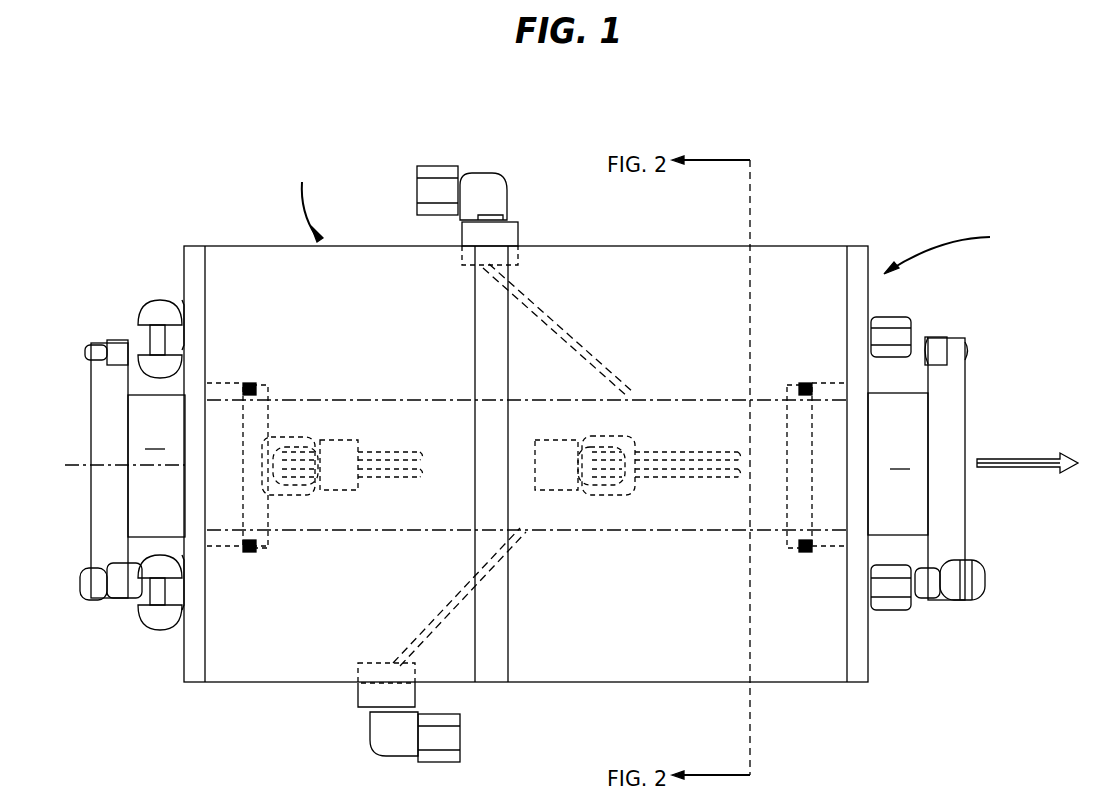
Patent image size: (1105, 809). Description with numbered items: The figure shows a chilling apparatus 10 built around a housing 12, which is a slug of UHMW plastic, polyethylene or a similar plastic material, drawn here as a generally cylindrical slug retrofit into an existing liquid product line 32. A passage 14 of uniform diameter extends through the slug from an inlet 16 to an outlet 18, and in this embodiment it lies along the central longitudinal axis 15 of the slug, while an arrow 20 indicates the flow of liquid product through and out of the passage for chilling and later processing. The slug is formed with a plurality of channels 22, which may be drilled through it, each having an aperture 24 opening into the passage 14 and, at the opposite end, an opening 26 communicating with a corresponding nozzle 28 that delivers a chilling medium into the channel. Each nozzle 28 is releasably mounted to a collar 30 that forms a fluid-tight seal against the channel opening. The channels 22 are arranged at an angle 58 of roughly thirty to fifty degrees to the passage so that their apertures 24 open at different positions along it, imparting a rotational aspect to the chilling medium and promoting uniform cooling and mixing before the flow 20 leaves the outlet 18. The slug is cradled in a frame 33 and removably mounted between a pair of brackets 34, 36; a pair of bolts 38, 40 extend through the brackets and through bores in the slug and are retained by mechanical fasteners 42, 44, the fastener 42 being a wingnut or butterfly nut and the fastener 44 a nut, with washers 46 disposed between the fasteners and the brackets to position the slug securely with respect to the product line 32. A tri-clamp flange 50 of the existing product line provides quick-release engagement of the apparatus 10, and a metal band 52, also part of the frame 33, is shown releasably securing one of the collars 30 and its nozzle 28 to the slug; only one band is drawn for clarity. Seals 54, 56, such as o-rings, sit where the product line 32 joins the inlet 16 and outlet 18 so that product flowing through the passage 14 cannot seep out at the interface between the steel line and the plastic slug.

The apparatus 10 is at (308, 197).
The housing 12 is at (240, 246).
The passage 14 is at (410, 398).
The central longitudinal axis 15 is at (90, 465).
The inlet 16 is at (215, 383).
The outlet 18 is at (785, 383).
The arrow 20 is at (1018, 470).
The channels 22 is at (547, 312).
The aperture 24 is at (400, 485).
The opening 26 is at (478, 270).
The nozzle 28 is at (500, 175).
The collar 30 is at (520, 242).
The existing liquid product line 32 is at (527, 447).
The frame 33 is at (950, 248).
The bracket 34 is at (205, 246).
The bracket 36 is at (851, 246).
The bolt 38 is at (140, 338).
The bolt 40 is at (110, 340).
The mechanical fastener 42 is at (150, 310).
The mechanical fastener 44 is at (927, 337).
The washers 46 is at (182, 300).
The tri-clamp flange 50 is at (968, 340).
The metal band 52 is at (510, 614).
The seal 54 is at (258, 383).
The seal 56 is at (805, 553).
The angle 58 is at (553, 420).